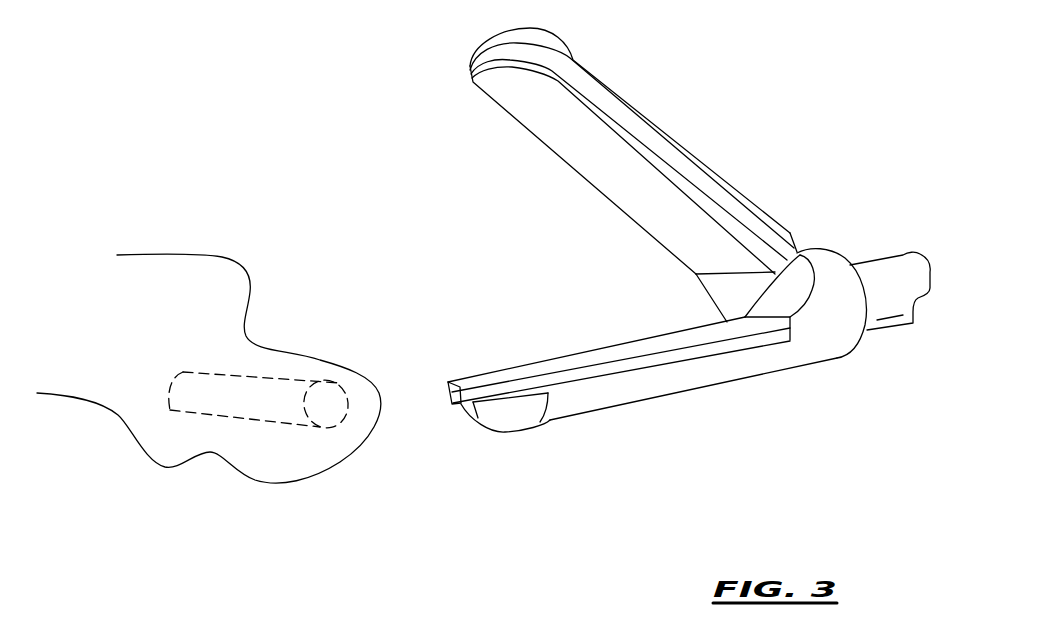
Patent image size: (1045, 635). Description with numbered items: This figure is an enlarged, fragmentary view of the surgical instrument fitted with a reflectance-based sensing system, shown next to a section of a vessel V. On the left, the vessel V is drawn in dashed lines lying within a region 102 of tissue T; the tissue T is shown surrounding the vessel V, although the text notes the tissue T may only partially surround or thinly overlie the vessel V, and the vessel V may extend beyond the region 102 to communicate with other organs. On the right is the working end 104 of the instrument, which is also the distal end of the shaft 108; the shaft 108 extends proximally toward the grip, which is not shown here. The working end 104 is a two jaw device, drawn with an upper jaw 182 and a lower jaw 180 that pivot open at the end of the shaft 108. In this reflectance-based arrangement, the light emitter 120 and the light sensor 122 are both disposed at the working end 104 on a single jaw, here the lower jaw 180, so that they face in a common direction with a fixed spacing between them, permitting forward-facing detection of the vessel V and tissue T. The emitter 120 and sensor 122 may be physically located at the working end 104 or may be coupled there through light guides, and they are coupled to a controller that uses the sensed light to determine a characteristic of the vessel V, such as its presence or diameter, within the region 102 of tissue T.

The region of tissue 102 is at (178, 457).
The working end 104 is at (814, 153).
The shaft 108 is at (885, 278).
The light emitter 120 is at (468, 413).
The light sensor 122 is at (450, 382).
The lower jaw member 180 is at (707, 380).
The upper jaw member 182 is at (653, 118).
The tissue T is at (211, 292).
The vessel V is at (172, 382).